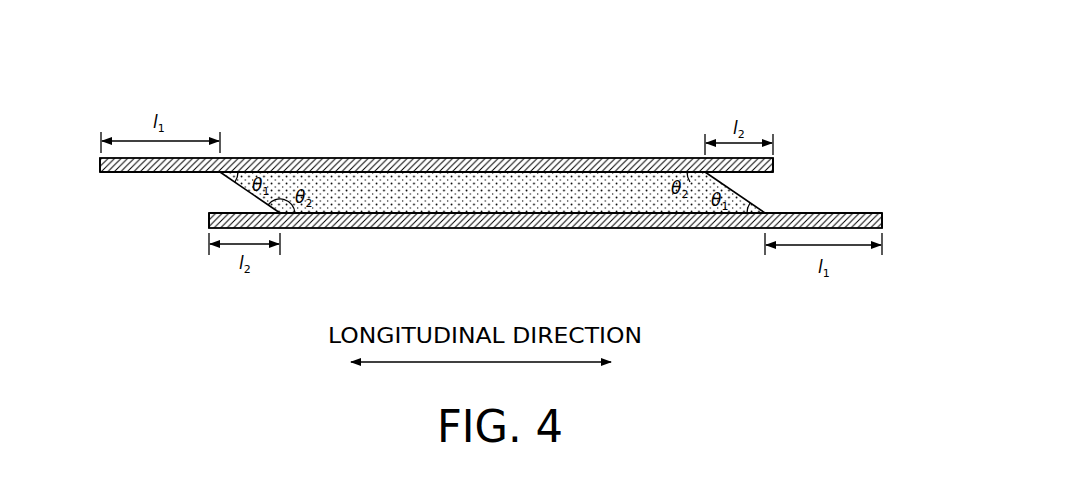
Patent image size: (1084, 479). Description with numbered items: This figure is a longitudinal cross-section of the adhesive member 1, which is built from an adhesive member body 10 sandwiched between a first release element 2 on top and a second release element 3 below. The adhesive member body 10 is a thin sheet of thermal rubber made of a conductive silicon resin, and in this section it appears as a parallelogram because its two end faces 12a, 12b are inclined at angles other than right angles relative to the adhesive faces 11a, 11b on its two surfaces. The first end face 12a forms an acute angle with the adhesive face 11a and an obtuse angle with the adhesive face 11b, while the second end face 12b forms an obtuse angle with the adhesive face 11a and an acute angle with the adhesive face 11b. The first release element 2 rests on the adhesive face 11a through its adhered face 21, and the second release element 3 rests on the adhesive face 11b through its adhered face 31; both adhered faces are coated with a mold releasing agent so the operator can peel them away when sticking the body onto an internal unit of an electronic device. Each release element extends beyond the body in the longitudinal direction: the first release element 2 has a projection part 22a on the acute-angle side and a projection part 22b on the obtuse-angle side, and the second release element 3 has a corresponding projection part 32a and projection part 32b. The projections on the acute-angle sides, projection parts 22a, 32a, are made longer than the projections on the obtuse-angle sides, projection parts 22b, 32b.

The adhesive member 1 is at (492, 156).
The first release element 2 is at (461, 148).
The second release element 3 is at (550, 253).
The adhesive member body 10 is at (489, 193).
The adhesive face 11a is at (605, 172).
The adhesive face 11b is at (605, 214).
The first end face 12a is at (221, 174).
The second end face 12b is at (750, 210).
The adhered face 21 is at (473, 175).
The projection part 22a is at (121, 172).
The projection part 22b is at (776, 173).
The adhered face 31 is at (474, 209).
The projection part 32a is at (875, 206).
The projection part 32b is at (232, 213).